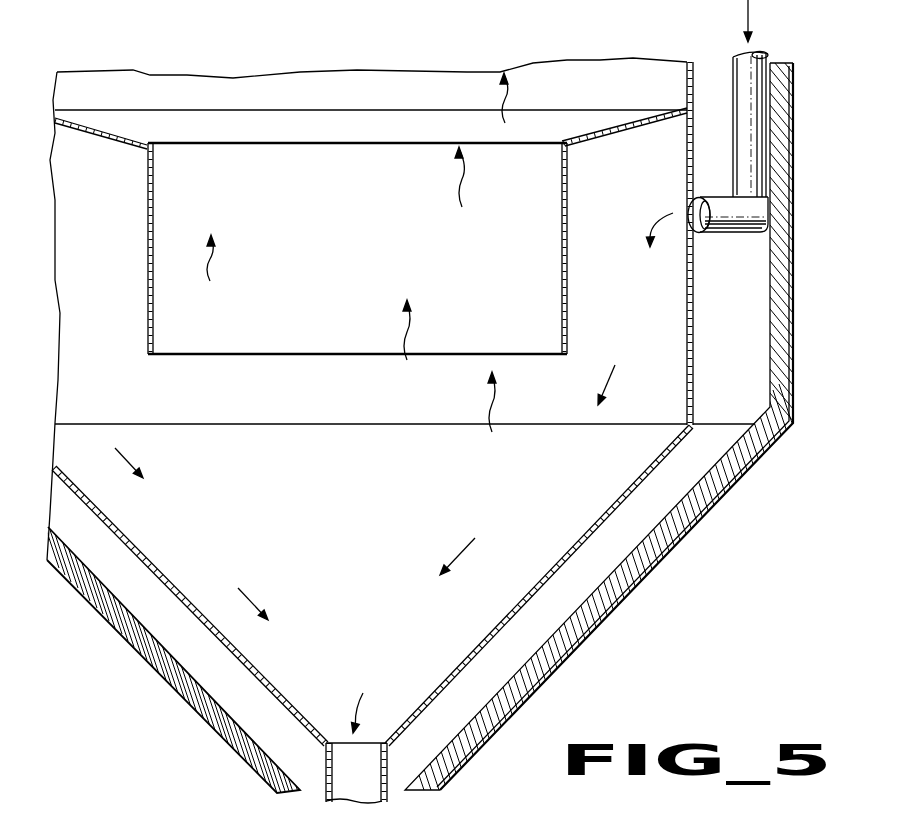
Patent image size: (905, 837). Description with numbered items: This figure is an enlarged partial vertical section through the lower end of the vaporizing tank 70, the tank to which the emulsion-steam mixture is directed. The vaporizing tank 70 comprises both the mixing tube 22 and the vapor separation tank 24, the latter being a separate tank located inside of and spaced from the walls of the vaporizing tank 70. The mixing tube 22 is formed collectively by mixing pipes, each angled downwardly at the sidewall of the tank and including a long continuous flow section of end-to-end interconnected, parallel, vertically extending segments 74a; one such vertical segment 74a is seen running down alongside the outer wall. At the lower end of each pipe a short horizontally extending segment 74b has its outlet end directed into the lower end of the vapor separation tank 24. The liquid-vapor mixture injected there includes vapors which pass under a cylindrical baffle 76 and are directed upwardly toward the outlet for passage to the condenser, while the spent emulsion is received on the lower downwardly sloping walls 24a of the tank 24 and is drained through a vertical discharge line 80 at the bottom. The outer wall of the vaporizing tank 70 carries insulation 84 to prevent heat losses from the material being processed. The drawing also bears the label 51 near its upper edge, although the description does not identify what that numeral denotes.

The mixing tube 22 is at (783, 44).
The vapor separation tank 24 is at (371, 516).
The lower downwardly sloping walls 24a is at (569, 543).
The filter element 51 is at (372, 39).
The vaporizing tank 70 is at (666, 579).
The vertically extending segments 74a is at (743, 70).
The short horizontally extending segment 74b is at (729, 221).
The cylindrical baffle 76 is at (368, 258).
The vertical discharge line 80 is at (366, 778).
The insulation 84 is at (780, 300).